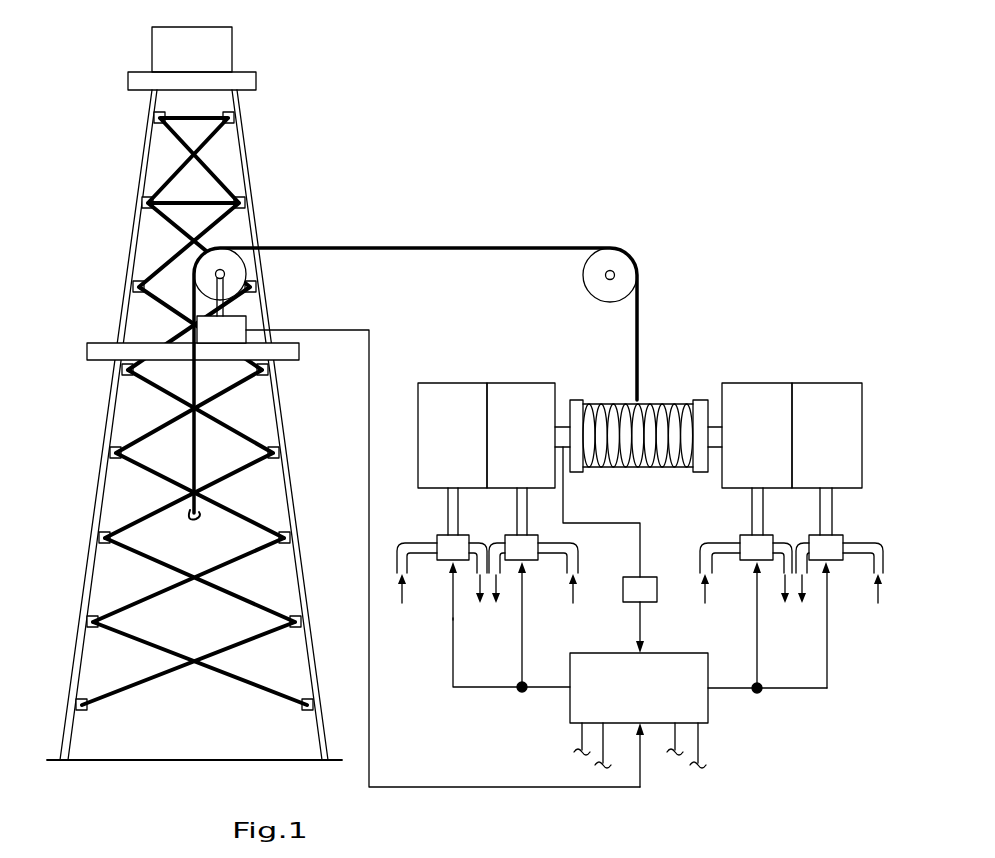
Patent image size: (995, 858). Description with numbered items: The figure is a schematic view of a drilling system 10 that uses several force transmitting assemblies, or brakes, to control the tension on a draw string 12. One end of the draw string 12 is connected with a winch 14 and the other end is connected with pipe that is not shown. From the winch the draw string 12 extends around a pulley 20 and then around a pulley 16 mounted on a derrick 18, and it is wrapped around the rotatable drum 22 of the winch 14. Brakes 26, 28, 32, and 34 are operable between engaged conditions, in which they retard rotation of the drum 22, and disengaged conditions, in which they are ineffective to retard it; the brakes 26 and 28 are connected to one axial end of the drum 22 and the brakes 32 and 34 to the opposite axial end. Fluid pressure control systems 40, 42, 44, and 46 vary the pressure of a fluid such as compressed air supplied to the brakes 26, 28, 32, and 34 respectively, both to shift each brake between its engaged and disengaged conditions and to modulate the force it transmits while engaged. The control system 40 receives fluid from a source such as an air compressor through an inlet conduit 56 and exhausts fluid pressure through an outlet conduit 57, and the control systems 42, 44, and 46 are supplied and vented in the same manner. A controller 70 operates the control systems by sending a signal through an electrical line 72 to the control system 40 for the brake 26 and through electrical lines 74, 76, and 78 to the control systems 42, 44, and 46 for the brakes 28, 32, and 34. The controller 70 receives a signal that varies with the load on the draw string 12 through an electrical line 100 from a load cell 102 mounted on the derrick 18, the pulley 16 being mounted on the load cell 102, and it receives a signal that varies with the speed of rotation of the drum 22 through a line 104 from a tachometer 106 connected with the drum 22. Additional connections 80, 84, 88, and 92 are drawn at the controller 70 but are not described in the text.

The drilling system 10 is at (533, 147).
The draw string 12 is at (377, 248).
The winch 14 is at (655, 397).
The pulley 16 is at (237, 273).
The derrick 18 is at (243, 143).
The pulley 20 is at (627, 278).
The rotatable drum 22 is at (702, 407).
The brake 26 is at (740, 449).
The brake 28 is at (810, 449).
The brake 32 is at (507, 433).
The brake 34 is at (430, 446).
The fluid pressure control system 40 is at (758, 550).
The fluid pressure control system 42 is at (833, 544).
The fluid pressure control system 44 is at (518, 546).
The fluid pressure control system 46 is at (455, 546).
The inlet conduit 56 is at (723, 548).
The outlet conduit 57 is at (785, 558).
The controller 70 is at (626, 706).
The electrical line 72 is at (757, 652).
The electrical line 74 is at (827, 643).
The electrical line 76 is at (518, 608).
The electrical line 78 is at (447, 628).
The input connection 80 is at (580, 737).
The input signal line 84 is at (628, 738).
The input connection 88 is at (660, 738).
The input connection 92 is at (700, 742).
The electrical line 100 is at (473, 790).
The load cell 102 is at (235, 330).
The line 104 is at (636, 614).
The tachometer 106 is at (648, 590).